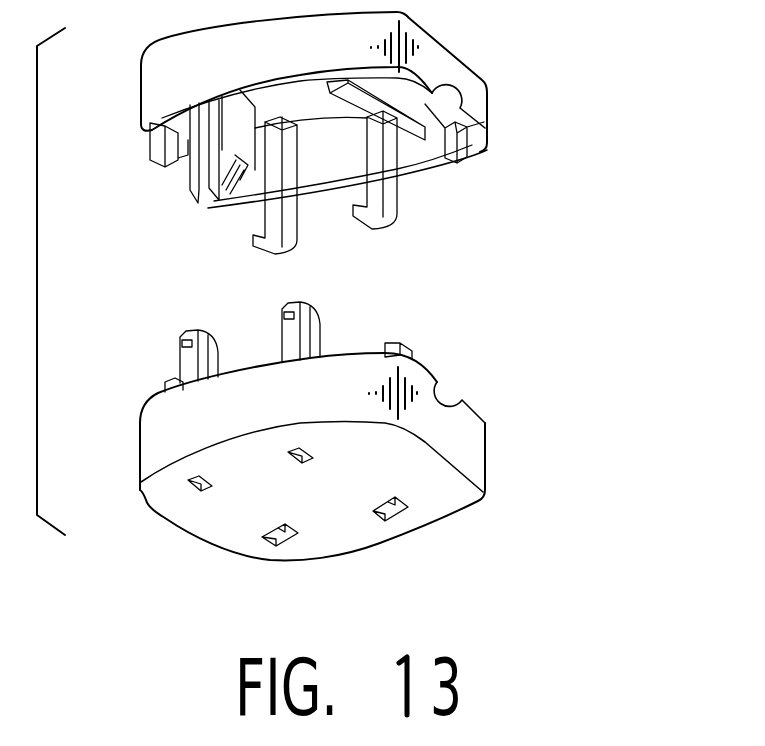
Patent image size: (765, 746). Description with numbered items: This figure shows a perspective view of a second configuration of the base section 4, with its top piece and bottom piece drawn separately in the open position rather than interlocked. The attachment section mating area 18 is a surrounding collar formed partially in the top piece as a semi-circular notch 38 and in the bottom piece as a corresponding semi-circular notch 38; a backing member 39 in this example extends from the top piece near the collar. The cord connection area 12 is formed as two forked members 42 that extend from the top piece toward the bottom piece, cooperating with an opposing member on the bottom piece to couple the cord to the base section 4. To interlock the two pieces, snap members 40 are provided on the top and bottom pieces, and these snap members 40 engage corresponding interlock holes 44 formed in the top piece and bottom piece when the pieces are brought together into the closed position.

The base section 4 is at (576, 518).
The cord connection area 12 is at (163, 167).
The attachment section mating area 18 is at (393, 102).
The semi-circular notch 38 is at (464, 100).
The backing member 39 is at (407, 145).
The snap members 40 is at (390, 218).
The forked members 42 is at (220, 202).
The interlock holes 44 is at (283, 538).